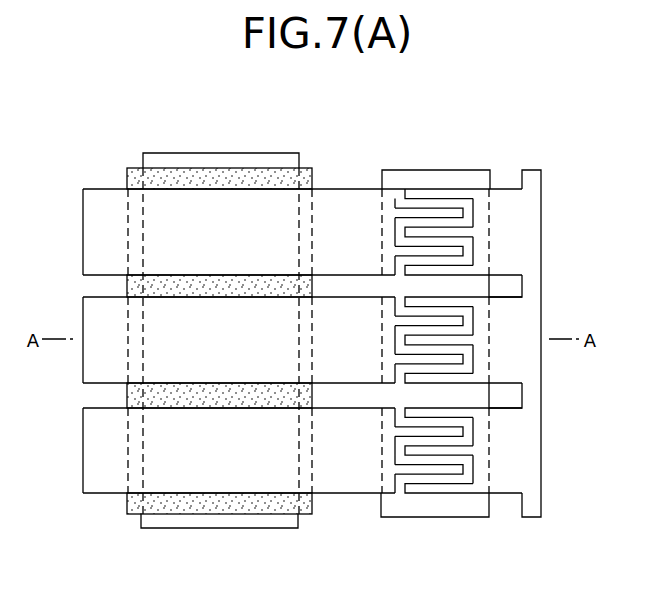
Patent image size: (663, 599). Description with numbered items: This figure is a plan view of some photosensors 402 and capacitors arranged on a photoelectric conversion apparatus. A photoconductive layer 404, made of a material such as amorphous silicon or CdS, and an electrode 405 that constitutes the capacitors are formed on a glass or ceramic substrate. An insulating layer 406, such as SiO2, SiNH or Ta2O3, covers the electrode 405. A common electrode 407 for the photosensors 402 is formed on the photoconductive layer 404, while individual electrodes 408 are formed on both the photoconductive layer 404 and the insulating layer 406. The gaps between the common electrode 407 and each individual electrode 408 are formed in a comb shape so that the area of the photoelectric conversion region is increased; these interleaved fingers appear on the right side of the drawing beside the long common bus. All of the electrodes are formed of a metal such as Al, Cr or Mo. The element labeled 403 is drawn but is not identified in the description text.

The photosensors 402 is at (438, 158).
The upper lead electrode 403 is at (213, 142).
The photoconductive layer 404 is at (443, 508).
The electrode 405 is at (255, 525).
The insulating layer 406 is at (130, 502).
The common electrode 407 is at (532, 234).
The individual electrodes 408 is at (92, 315).